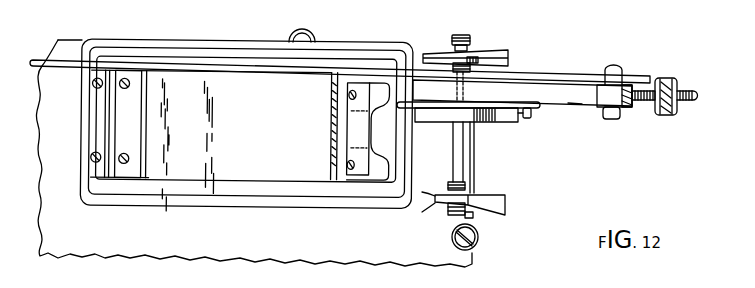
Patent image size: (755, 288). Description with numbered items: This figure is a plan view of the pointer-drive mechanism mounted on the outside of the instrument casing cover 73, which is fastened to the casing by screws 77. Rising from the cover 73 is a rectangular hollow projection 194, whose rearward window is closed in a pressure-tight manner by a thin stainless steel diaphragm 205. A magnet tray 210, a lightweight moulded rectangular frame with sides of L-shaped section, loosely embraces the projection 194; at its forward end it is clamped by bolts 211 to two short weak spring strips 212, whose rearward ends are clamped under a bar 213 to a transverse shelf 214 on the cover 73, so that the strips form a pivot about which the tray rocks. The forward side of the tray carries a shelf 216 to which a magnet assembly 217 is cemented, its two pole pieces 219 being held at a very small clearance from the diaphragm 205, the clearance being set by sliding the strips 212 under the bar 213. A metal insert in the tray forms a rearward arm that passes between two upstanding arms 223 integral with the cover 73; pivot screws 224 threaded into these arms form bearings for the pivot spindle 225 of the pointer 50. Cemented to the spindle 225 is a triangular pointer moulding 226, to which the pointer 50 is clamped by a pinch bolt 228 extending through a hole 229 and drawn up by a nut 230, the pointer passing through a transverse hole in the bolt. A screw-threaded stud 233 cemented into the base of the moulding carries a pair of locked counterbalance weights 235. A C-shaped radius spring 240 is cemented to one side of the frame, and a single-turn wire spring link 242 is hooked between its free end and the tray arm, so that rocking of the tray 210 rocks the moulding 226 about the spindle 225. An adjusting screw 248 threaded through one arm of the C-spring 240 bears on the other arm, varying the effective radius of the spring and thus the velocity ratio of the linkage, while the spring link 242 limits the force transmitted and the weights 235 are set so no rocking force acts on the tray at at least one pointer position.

The pointer 50 is at (44, 60).
The cover 73 is at (107, 263).
The screws 77 is at (313, 34).
The hollow projection 194 is at (275, 137).
The diaphragm 205 is at (348, 88).
The magnet tray 210 is at (164, 39).
The bolts 211 is at (92, 84).
The spring strips 212 is at (108, 140).
The bar 213 is at (136, 126).
The transverse shelf 214 is at (143, 150).
The shelf 216 is at (362, 128).
The magnet assembly 217 is at (312, 126).
The pole pieces 219 is at (357, 126).
The upstanding arms 223 is at (488, 52).
The pivot screws 224 is at (452, 38).
The pivot spindle 225 is at (465, 158).
The pointer moulding 226 is at (575, 104).
The pinch bolt 228 is at (610, 64).
The hole 229 is at (598, 95).
The nut 230 is at (630, 105).
The screw-threaded stud 233 is at (690, 90).
The counterbalance weights 235 is at (672, 80).
The radius spring 240 is at (482, 122).
The spring link 242 is at (436, 109).
The adjusting screw 248 is at (530, 118).